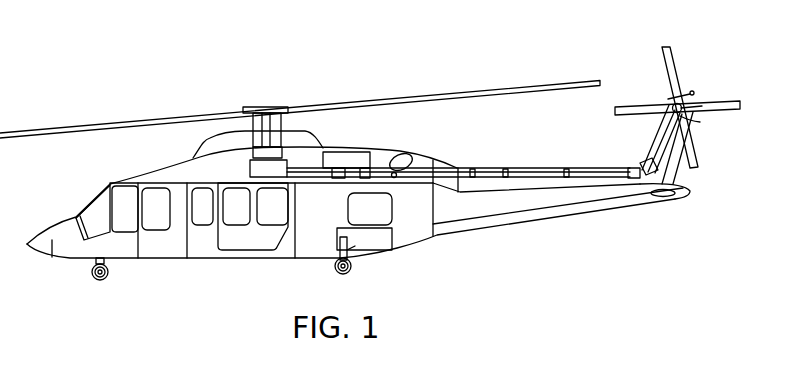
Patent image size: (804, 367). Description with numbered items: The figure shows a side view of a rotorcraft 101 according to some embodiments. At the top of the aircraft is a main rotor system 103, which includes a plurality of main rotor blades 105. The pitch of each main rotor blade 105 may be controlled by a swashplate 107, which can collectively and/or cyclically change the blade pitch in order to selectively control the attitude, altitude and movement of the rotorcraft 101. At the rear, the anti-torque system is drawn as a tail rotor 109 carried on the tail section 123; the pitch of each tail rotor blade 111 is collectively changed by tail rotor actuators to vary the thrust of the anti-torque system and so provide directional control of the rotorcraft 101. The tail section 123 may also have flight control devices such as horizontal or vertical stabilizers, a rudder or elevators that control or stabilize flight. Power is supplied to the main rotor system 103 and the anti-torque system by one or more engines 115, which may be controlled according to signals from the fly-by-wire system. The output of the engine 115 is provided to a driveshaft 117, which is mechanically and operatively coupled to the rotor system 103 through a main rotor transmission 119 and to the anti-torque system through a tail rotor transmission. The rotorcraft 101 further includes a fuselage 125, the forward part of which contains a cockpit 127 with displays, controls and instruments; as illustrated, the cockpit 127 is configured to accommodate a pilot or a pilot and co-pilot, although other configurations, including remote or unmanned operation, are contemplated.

The rotorcraft 101 is at (162, 54).
The main rotor system 103 is at (300, 83).
The main rotor blade 105 is at (118, 124).
The swashplate 107 is at (253, 150).
The tail rotor 109 is at (682, 97).
The tail rotor blade 111 is at (720, 115).
The engine 115 is at (346, 153).
The driveshaft 117 is at (304, 184).
The main rotor transmission 119 is at (252, 176).
The tail section 123 is at (557, 219).
The fuselage 125 is at (203, 259).
The cockpit 127 is at (82, 208).